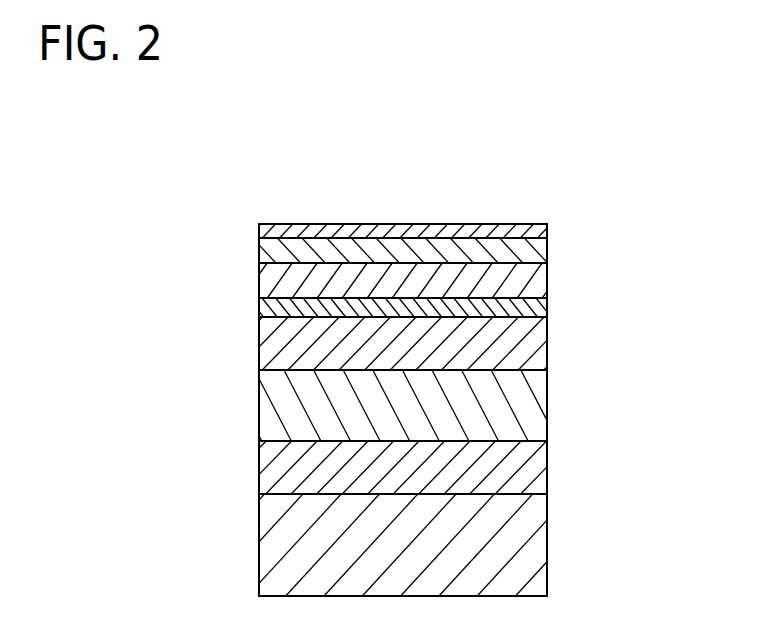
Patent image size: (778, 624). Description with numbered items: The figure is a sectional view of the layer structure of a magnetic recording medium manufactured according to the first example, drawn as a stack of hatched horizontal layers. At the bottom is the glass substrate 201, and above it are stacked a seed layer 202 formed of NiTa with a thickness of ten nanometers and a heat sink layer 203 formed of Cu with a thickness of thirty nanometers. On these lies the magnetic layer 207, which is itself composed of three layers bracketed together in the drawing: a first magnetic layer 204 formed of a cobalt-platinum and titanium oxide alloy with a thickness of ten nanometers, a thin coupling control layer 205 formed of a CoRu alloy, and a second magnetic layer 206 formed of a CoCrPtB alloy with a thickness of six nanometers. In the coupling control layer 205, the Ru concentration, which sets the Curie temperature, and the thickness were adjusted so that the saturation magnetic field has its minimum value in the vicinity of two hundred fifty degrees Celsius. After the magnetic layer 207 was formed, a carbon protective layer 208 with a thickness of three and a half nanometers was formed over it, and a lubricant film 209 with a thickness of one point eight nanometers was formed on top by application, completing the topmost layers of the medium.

The glass substrate 201 is at (535, 533).
The seed layer 202 is at (537, 462).
The heat sink layer 203 is at (537, 402).
The first magnetic layer 204 is at (537, 340).
The coupling control layer 205 is at (545, 307).
The second magnetic layer 206 is at (540, 277).
The magnetic layer 207 is at (647, 252).
The carbon protective layer 208 is at (547, 248).
The lubricant film 209 is at (538, 228).